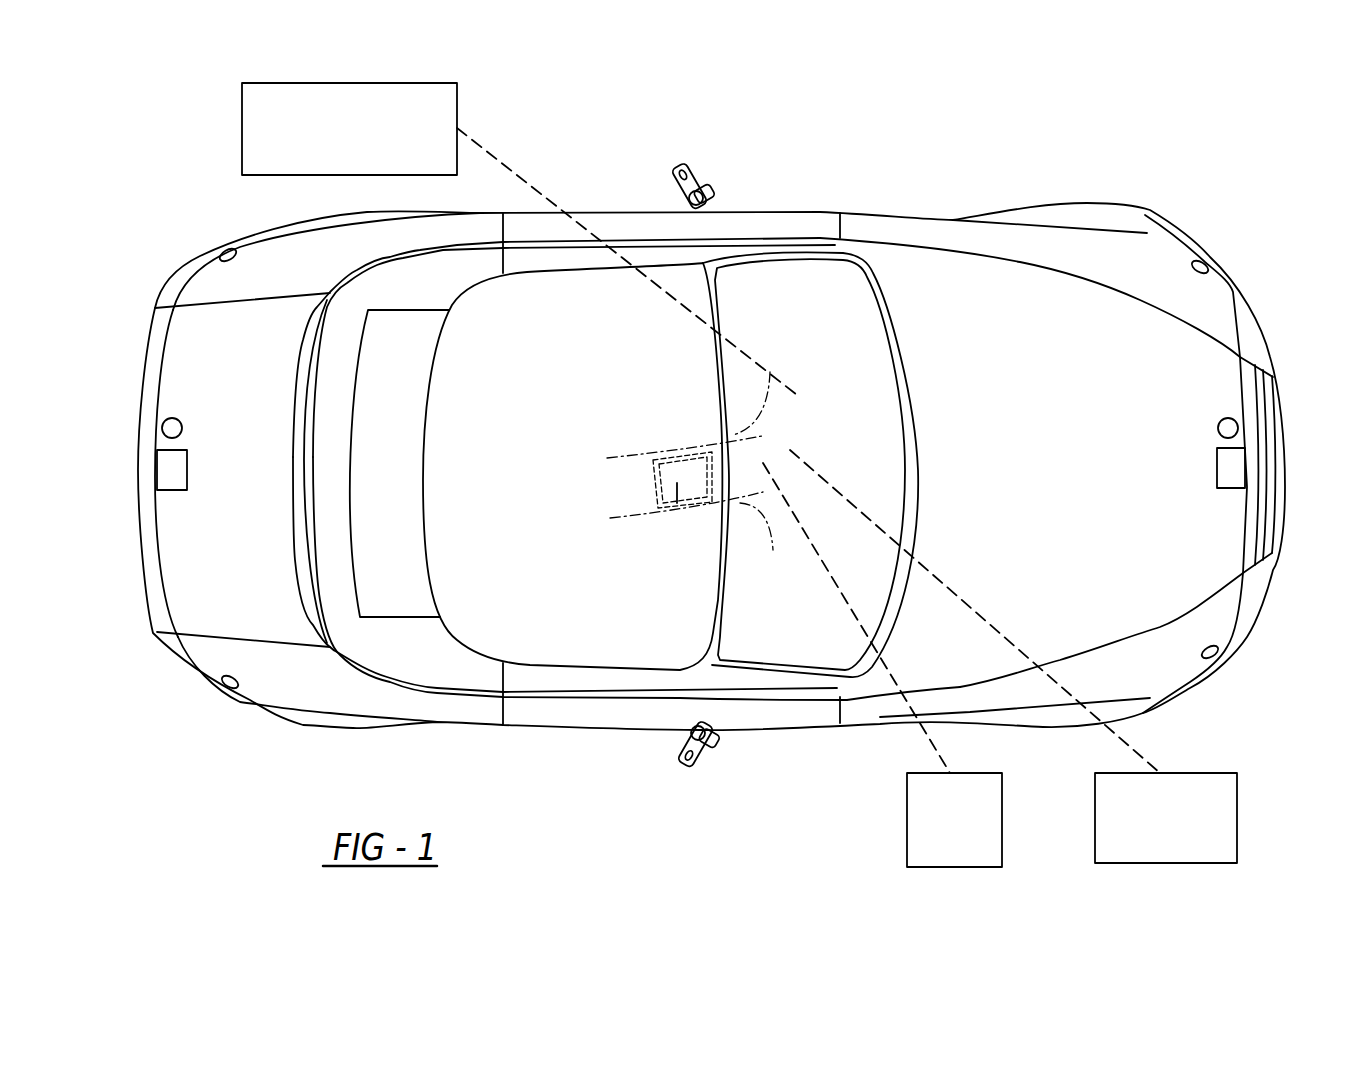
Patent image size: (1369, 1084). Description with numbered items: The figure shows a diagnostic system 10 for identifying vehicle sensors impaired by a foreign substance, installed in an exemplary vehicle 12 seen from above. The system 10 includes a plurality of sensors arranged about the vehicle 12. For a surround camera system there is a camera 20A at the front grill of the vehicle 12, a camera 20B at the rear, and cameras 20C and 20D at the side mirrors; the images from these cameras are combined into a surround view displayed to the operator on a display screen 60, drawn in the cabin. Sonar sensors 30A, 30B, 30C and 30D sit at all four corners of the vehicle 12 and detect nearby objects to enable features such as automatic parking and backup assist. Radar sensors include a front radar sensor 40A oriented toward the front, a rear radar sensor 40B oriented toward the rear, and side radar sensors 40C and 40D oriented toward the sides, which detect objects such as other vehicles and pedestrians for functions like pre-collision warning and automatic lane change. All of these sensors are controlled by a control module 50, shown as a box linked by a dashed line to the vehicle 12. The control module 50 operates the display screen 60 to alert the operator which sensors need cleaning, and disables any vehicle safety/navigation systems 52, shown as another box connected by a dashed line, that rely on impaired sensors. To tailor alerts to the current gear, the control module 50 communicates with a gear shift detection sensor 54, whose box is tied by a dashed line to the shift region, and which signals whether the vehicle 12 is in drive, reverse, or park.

The diagnostic system 10 is at (970, 150).
The vehicle 12 is at (1051, 325).
The camera 20A is at (1245, 468).
The camera 20B is at (166, 468).
The camera 20C is at (682, 176).
The camera 20D is at (693, 757).
The sonar sensor 30A is at (1212, 266).
The sonar sensor 30B is at (1222, 655).
The sonar sensor 30C is at (224, 252).
The sonar sensor 30D is at (228, 690).
The front radar sensor 40A is at (1238, 425).
The rear radar sensor 40B is at (162, 428).
The side radar sensor 40C is at (700, 194).
The side radar sensor 40D is at (702, 738).
The control module 50 is at (903, 822).
The vehicle safety/navigation systems 52 is at (242, 117).
The gear shift detection sensor 54 is at (1237, 820).
The display screen 60 is at (677, 503).